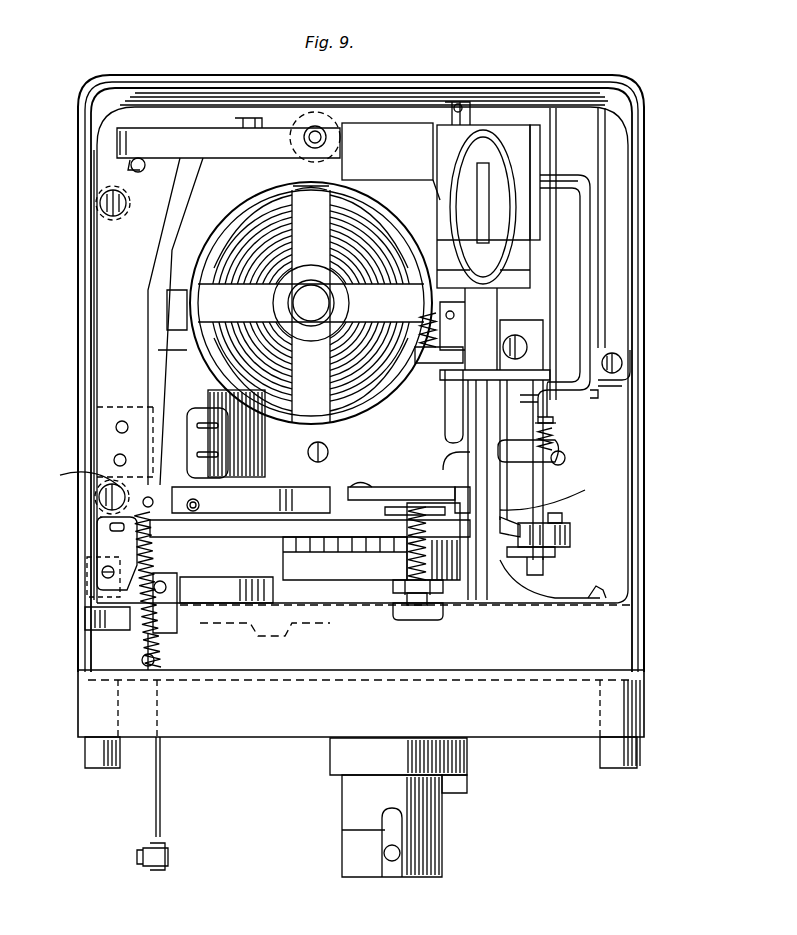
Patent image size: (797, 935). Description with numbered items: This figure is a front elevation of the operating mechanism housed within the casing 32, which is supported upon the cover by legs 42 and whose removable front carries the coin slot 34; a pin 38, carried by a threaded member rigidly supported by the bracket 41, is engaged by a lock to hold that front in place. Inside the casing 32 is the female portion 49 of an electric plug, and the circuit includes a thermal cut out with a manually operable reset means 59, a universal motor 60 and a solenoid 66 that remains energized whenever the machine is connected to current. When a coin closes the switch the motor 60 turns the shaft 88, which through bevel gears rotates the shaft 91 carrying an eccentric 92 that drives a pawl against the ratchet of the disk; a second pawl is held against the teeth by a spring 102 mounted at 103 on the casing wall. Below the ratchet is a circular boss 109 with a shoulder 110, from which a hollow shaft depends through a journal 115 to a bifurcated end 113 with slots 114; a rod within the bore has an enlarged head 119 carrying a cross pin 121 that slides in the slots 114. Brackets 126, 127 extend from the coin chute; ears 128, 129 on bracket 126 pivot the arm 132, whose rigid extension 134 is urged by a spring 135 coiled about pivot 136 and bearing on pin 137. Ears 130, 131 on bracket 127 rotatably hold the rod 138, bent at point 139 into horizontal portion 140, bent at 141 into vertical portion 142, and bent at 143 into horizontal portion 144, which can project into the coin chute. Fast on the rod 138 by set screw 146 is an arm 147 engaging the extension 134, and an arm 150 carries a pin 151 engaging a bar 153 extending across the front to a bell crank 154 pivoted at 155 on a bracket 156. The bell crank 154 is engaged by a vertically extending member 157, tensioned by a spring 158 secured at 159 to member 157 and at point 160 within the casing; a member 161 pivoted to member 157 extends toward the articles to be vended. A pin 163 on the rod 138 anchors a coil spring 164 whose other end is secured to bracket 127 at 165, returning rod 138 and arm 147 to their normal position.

The casing 32 is at (646, 152).
The coin slot 34 is at (492, 178).
The pin 38 is at (305, 135).
The bracket 41 is at (330, 105).
The legs 42 is at (105, 768).
The female portion of two part electric plug 49 is at (188, 410).
The manually operable reset means 59 is at (142, 172).
The universal motor 60 is at (395, 395).
The solenoid 66 is at (400, 140).
The shaft 88 is at (300, 300).
The shaft 91 is at (300, 465).
The eccentric 92 is at (232, 487).
The spring 102 is at (320, 478).
The mounting point of spring 103 is at (603, 578).
The circular boss 109 is at (330, 600).
The shoulder 110 is at (353, 575).
The bifurcated end 113 is at (442, 828).
The slots 114 is at (342, 830).
The journal 115 is at (340, 768).
The enlarged head 119 is at (382, 868).
The cross pin 121 is at (392, 862).
The bracket 126 is at (455, 490).
The bracket 127 is at (595, 484).
The ear 128 is at (400, 513).
The ear 129 is at (445, 600).
The ear 130 is at (528, 420).
The ear 131 is at (558, 554).
The arm 132 is at (365, 482).
The rigid extension 134 is at (432, 452).
The spring 135 is at (412, 560).
The pivot 136 is at (418, 570).
The pin 137 is at (385, 487).
The rod 138 is at (545, 500).
The bend point 139 is at (540, 392).
The horizontal portion 140 is at (608, 393).
The bend 141 is at (625, 388).
The vertical portion 142 is at (600, 328).
The bend 143 is at (598, 190).
The horizontal portion 144 is at (566, 178).
The set screw 146 is at (566, 460).
The arm 147 is at (522, 470).
The arm 150 is at (572, 535).
The pin 151 is at (562, 514).
The bar 153 is at (280, 565).
The bell crank 154 is at (110, 548).
The pivot 155 is at (100, 572).
The bracket 156 is at (90, 590).
The vertically extending member 157 is at (162, 778).
The spring 158 is at (140, 640).
The spring attachment point 159 is at (157, 673).
The spring attachment point 160 is at (70, 470).
The member 161 is at (152, 870).
The pin 163 is at (553, 443).
The coil spring 164 is at (555, 425).
The spring attachment point 165 is at (556, 418).